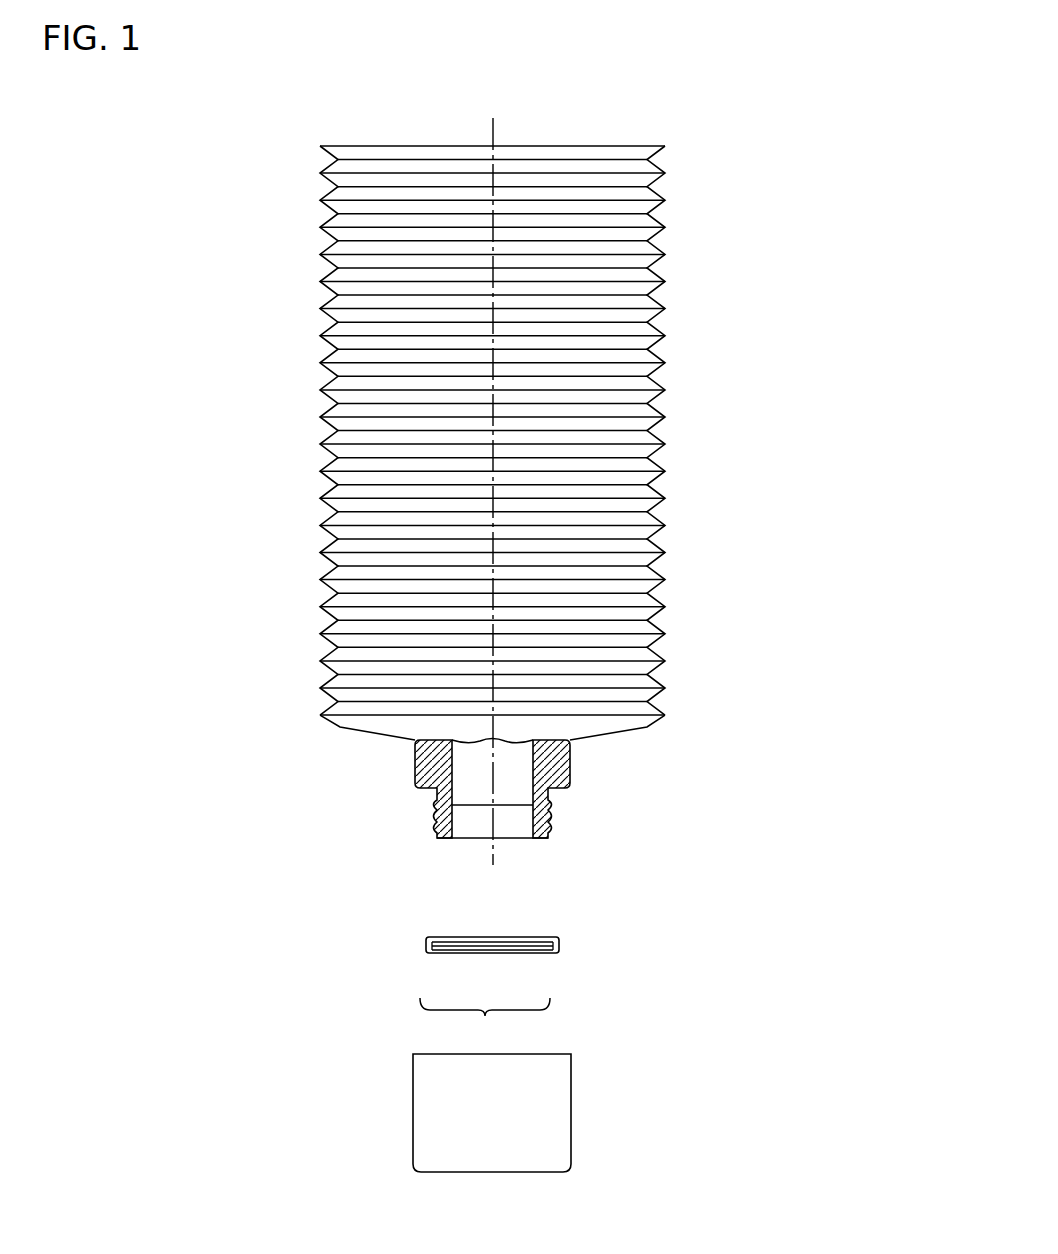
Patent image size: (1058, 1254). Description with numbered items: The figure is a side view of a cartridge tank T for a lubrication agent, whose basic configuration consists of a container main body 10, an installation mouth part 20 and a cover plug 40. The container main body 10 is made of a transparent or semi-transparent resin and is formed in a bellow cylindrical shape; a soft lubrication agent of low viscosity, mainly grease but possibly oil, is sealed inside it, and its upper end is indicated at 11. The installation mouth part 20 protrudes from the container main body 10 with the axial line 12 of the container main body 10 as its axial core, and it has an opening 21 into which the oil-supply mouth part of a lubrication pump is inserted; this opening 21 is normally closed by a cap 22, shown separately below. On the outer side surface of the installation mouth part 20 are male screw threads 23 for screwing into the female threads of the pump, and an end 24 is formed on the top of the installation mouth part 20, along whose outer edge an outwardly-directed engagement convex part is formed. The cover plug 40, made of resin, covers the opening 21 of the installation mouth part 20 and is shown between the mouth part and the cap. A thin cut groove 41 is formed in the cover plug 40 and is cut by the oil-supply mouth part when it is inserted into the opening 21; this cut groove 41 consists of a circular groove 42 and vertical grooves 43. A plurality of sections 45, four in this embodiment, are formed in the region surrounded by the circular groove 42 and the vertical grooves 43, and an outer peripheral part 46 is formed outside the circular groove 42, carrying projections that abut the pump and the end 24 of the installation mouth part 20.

The container main body 10 is at (633, 365).
The top end of threaded body 11 is at (598, 148).
The axial line 12 is at (493, 467).
The cartridge tank T is at (766, 217).
The installation mouth part 20 is at (435, 795).
The opening 21 is at (472, 825).
The cap 22 is at (545, 1125).
The male screw threads 23 is at (557, 823).
The end 24 is at (552, 838).
The cover plug 40 is at (426, 950).
The cut groove 41 is at (485, 1025).
The circular groove 42 is at (447, 953).
The vertical grooves 43 is at (497, 953).
The sections 45 is at (530, 953).
The outer peripheral part 46 is at (533, 953).